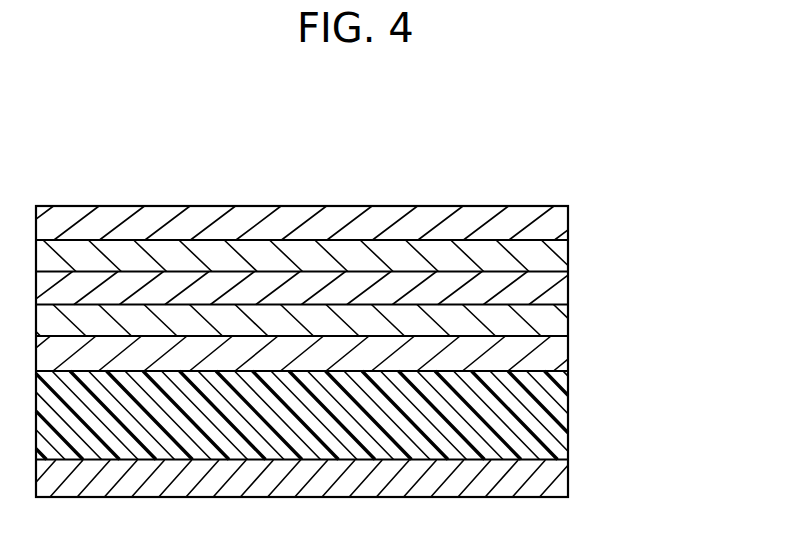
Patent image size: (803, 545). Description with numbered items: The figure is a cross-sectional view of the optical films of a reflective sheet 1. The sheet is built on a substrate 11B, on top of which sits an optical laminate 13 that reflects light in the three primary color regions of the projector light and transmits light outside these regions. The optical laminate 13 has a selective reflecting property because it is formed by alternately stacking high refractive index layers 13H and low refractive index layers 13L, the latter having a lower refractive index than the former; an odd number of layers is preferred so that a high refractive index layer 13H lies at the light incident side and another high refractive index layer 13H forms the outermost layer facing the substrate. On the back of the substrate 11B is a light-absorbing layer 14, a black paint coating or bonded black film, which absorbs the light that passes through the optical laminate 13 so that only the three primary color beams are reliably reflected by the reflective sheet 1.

The reflective sheet 1 is at (461, 166).
The optical laminate 13 is at (394, 275).
The high refractive index layer 13H is at (615, 340).
The low refractive index layer 13L is at (692, 342).
The substrate 11B is at (552, 422).
The light-absorbing layer 14 is at (553, 483).